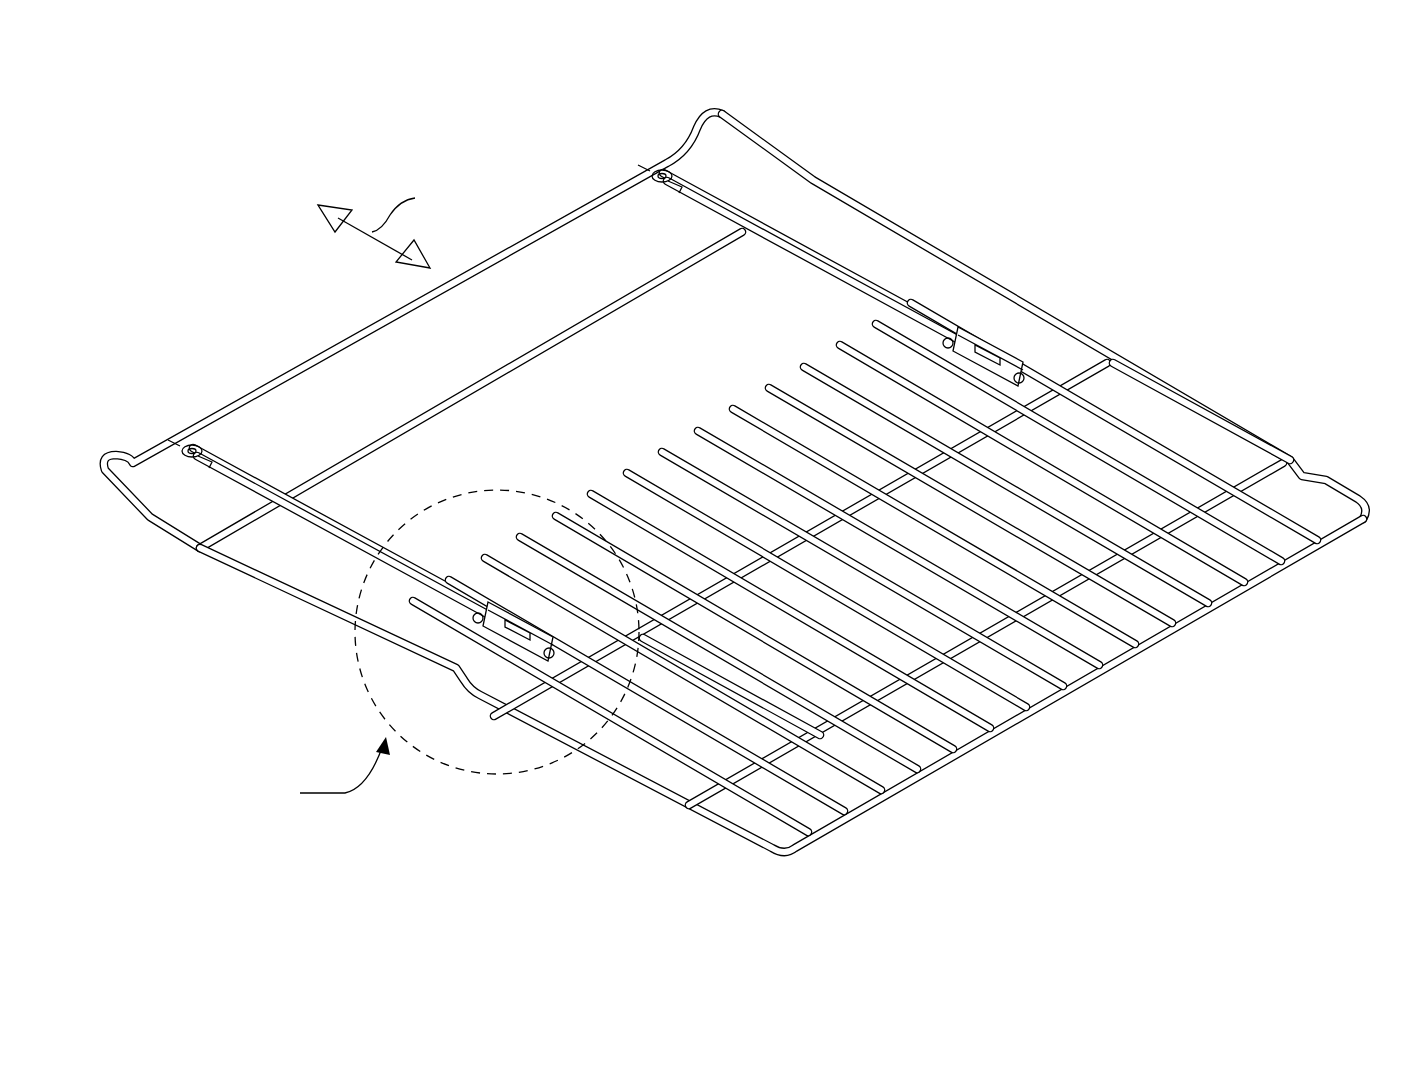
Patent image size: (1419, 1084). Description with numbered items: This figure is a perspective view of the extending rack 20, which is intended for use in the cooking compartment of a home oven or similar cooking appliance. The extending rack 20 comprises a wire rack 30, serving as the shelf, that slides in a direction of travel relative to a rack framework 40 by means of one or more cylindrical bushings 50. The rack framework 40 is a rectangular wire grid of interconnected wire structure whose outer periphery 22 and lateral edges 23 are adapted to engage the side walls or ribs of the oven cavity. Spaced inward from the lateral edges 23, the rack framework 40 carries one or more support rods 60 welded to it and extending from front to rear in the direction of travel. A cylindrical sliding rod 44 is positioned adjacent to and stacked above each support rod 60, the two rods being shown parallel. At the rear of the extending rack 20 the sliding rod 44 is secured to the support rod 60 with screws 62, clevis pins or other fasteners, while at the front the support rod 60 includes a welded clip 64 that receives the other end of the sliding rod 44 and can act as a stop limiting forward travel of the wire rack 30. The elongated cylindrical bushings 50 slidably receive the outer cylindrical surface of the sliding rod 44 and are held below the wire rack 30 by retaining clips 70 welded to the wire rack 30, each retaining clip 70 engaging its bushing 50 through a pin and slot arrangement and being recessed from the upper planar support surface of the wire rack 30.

The extending rack 20 is at (538, 86).
The outer periphery 22 is at (543, 208).
The lateral edges 23 is at (330, 609).
The wire rack 30 is at (781, 520).
The rack framework 40 is at (735, 336).
The sliding rod 44 is at (320, 517).
The cylindrical bushing 50 is at (472, 635).
The support rod 60 is at (295, 520).
The screws 62 is at (190, 446).
The welded clip 64 is at (643, 640).
The retaining clip 70 is at (548, 590).